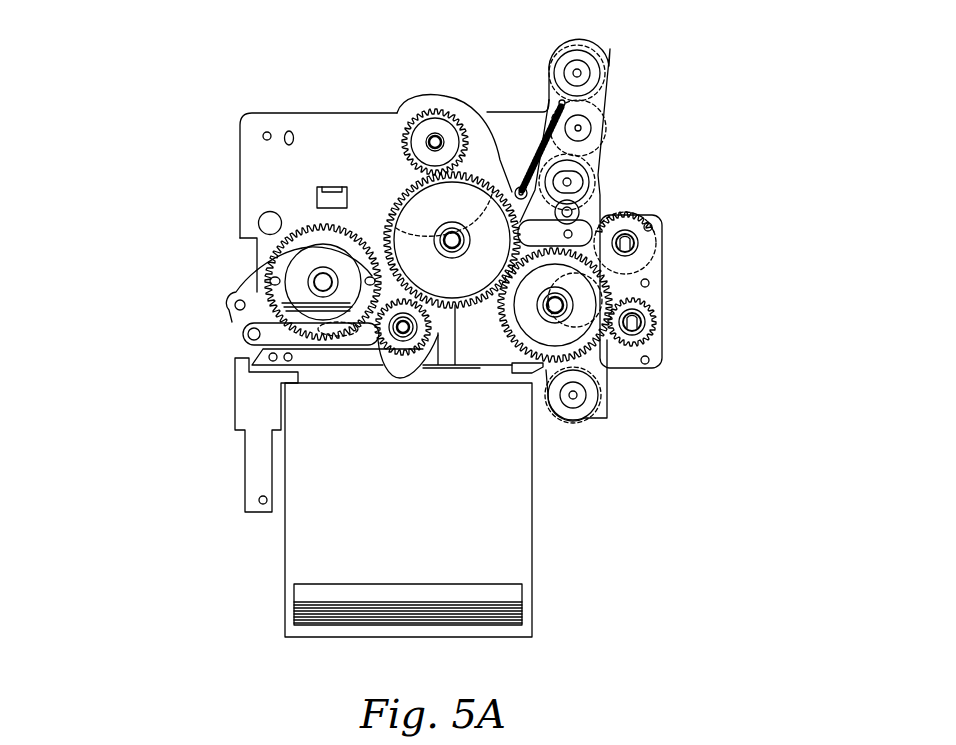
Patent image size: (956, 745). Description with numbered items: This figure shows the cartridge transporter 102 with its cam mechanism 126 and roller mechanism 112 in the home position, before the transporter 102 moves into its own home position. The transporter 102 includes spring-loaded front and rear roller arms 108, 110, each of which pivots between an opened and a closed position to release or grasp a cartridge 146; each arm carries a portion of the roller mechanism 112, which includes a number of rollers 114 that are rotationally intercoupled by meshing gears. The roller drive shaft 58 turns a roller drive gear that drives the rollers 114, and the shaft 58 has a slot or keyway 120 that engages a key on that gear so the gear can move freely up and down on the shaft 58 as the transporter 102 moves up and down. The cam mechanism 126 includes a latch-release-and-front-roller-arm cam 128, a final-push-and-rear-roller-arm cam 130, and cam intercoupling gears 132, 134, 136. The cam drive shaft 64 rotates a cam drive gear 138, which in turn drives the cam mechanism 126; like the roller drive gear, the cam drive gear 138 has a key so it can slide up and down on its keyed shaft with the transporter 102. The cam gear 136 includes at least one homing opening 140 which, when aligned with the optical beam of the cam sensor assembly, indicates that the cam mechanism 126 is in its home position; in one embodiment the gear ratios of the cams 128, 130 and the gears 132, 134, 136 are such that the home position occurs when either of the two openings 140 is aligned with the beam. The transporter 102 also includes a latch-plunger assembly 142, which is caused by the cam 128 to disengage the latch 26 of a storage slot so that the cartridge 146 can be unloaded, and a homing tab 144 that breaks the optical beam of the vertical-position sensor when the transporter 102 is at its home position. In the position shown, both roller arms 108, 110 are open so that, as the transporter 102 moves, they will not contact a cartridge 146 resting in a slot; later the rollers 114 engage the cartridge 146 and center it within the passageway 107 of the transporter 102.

The latch 26 is at (243, 400).
The roller drive shaft 58 is at (636, 230).
The cam drive shaft 64 is at (641, 324).
The transporter 102 is at (160, 221).
The passageway 107 is at (512, 375).
The front roller arm 108 is at (607, 422).
The rear roller arm 110 is at (609, 100).
The roller mechanism 112 is at (626, 185).
The rollers 114 is at (577, 43).
The keyway 120 is at (637, 252).
The cam mechanism 126 is at (417, 94).
The latch-release-and-front-roller-arm cam 128 is at (402, 372).
The final-push-and-rear-roller-arm cam 130 is at (460, 106).
The cam intercoupling gear 132 is at (530, 328).
The cam intercoupling gear 134 is at (470, 289).
The cam gear 136 is at (308, 240).
The cam drive gear 138 is at (641, 300).
The homing opening 140 is at (262, 266).
The latch-plunger assembly 142 is at (243, 341).
The homing tab 144 is at (326, 187).
The cartridge 146 is at (422, 511).